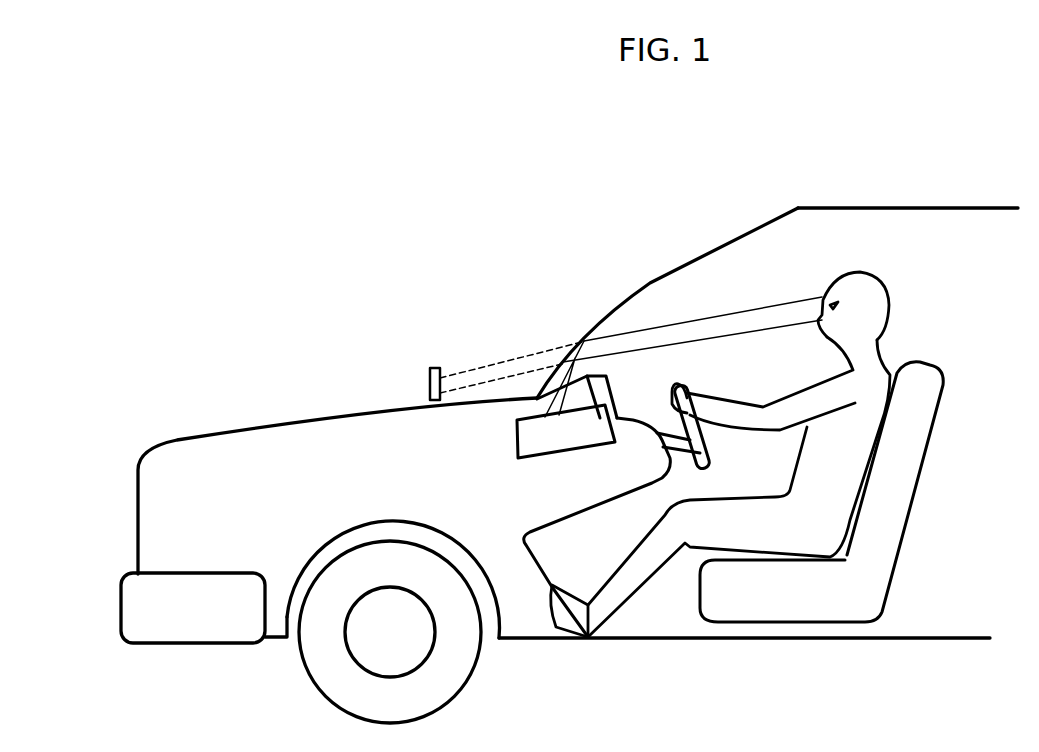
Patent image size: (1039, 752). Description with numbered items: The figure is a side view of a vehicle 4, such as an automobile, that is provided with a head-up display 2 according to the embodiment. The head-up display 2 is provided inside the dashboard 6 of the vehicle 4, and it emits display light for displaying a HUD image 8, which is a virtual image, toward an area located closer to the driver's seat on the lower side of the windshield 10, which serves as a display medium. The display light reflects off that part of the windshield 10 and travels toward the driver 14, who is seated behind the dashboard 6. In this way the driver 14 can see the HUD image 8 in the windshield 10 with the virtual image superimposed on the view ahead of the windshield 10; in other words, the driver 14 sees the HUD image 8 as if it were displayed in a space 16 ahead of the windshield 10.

The head-up display 2 is at (545, 440).
The vehicle 4 is at (950, 207).
The dashboard 6 is at (597, 387).
The HUD image 8 is at (430, 368).
The windshield 10 is at (747, 228).
The driver 14 is at (867, 279).
The space 16 is at (448, 259).